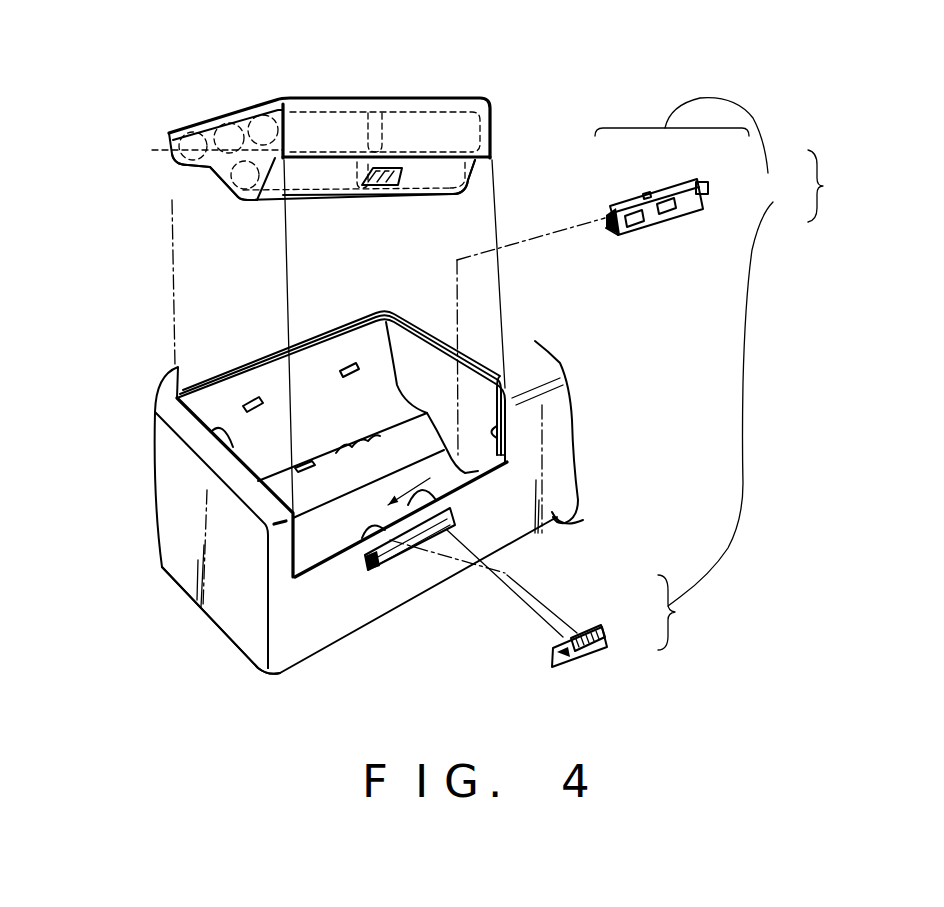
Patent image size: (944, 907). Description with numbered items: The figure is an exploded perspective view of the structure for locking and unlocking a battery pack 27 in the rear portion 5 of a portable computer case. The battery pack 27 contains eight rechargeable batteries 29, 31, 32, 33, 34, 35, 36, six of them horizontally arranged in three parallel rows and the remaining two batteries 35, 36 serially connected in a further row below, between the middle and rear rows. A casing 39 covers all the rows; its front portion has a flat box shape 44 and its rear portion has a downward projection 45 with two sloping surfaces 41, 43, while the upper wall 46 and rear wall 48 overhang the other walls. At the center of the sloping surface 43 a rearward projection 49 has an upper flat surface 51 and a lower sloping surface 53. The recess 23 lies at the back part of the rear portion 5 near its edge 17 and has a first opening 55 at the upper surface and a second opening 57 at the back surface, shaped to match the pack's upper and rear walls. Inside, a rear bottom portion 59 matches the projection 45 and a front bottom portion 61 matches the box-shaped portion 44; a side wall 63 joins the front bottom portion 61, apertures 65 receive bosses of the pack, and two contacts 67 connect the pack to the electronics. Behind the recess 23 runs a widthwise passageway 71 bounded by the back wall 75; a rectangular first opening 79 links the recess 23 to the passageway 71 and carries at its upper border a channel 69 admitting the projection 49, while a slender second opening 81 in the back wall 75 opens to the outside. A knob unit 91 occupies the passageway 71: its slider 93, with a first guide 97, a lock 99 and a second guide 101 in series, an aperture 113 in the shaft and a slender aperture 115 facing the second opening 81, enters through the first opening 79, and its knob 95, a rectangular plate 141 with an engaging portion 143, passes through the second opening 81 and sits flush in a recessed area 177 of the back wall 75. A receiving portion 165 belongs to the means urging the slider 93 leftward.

The rear portion 5 is at (366, 636).
The edge 17 is at (551, 356).
The recess 23 is at (351, 458).
The battery pack 27 is at (458, 77).
The rechargeable battery 29 is at (199, 149).
The rechargeable battery 31 is at (221, 118).
The rechargeable battery 32 is at (493, 148).
The rechargeable battery 33 is at (260, 114).
The rechargeable battery 34 is at (491, 112).
The rechargeable battery 35 is at (237, 200).
The rechargeable battery 36 is at (452, 194).
The casing 39 is at (464, 186).
The sloping surface 41 is at (219, 181).
The sloping surface 43 is at (473, 168).
The flat box shape 44 is at (190, 166).
The projection 45 is at (245, 202).
The upper wall 46 is at (377, 98).
The rear wall 48 is at (492, 127).
The projection 49 is at (396, 172).
The upper flat surface 51 is at (377, 157).
The lower sloping surface 53 is at (376, 162).
The first opening 55 is at (212, 434).
The second opening 57 is at (502, 447).
The rear bottom portion 59 is at (319, 545).
The front bottom portion 61 is at (395, 392).
The side wall 63 is at (227, 403).
The apertures 65 is at (345, 361).
The contacts 67 is at (337, 460).
The channel 69 is at (468, 495).
The passageway 71 is at (333, 630).
The back wall 75 is at (583, 520).
The first opening 79 is at (366, 540).
The second opening 81 is at (404, 541).
The knob unit 91 is at (829, 186).
The slider 93 is at (708, 198).
The knob 95 is at (763, 214).
The first guide 97 is at (620, 200).
The lock 99 is at (653, 192).
The second guide 101 is at (703, 178).
The aperture 113 is at (636, 227).
The aperture 115 is at (668, 212).
The rectangular plate 141 is at (608, 637).
The engaging portion 143 is at (578, 624).
The receiving portion 165 is at (612, 228).
The recessed area 177 is at (376, 562).